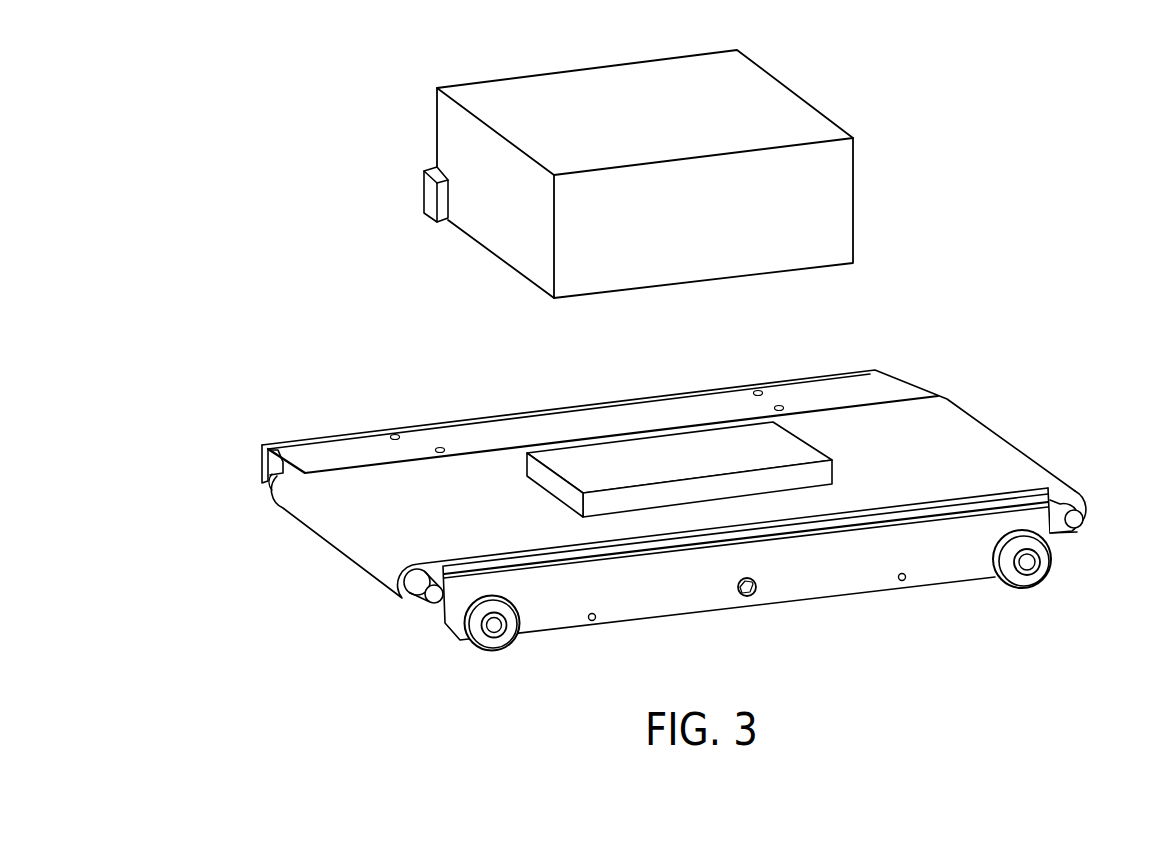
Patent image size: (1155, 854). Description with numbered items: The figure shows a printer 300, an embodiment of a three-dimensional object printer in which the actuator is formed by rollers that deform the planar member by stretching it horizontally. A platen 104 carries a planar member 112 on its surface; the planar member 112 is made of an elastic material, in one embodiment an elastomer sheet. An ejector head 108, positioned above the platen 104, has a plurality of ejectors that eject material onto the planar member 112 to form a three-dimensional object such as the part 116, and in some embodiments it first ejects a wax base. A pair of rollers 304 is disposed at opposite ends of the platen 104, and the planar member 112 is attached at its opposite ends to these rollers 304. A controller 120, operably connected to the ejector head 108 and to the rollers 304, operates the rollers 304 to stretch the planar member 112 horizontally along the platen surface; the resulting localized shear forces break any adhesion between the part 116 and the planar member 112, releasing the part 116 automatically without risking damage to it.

The printer 300 is at (328, 130).
The ejector head 108 is at (840, 207).
The controller 120 is at (428, 197).
The planar member 112 is at (1008, 458).
The part 116 is at (795, 450).
The platen 104 is at (570, 613).
The pair of rollers 304 is at (434, 597).